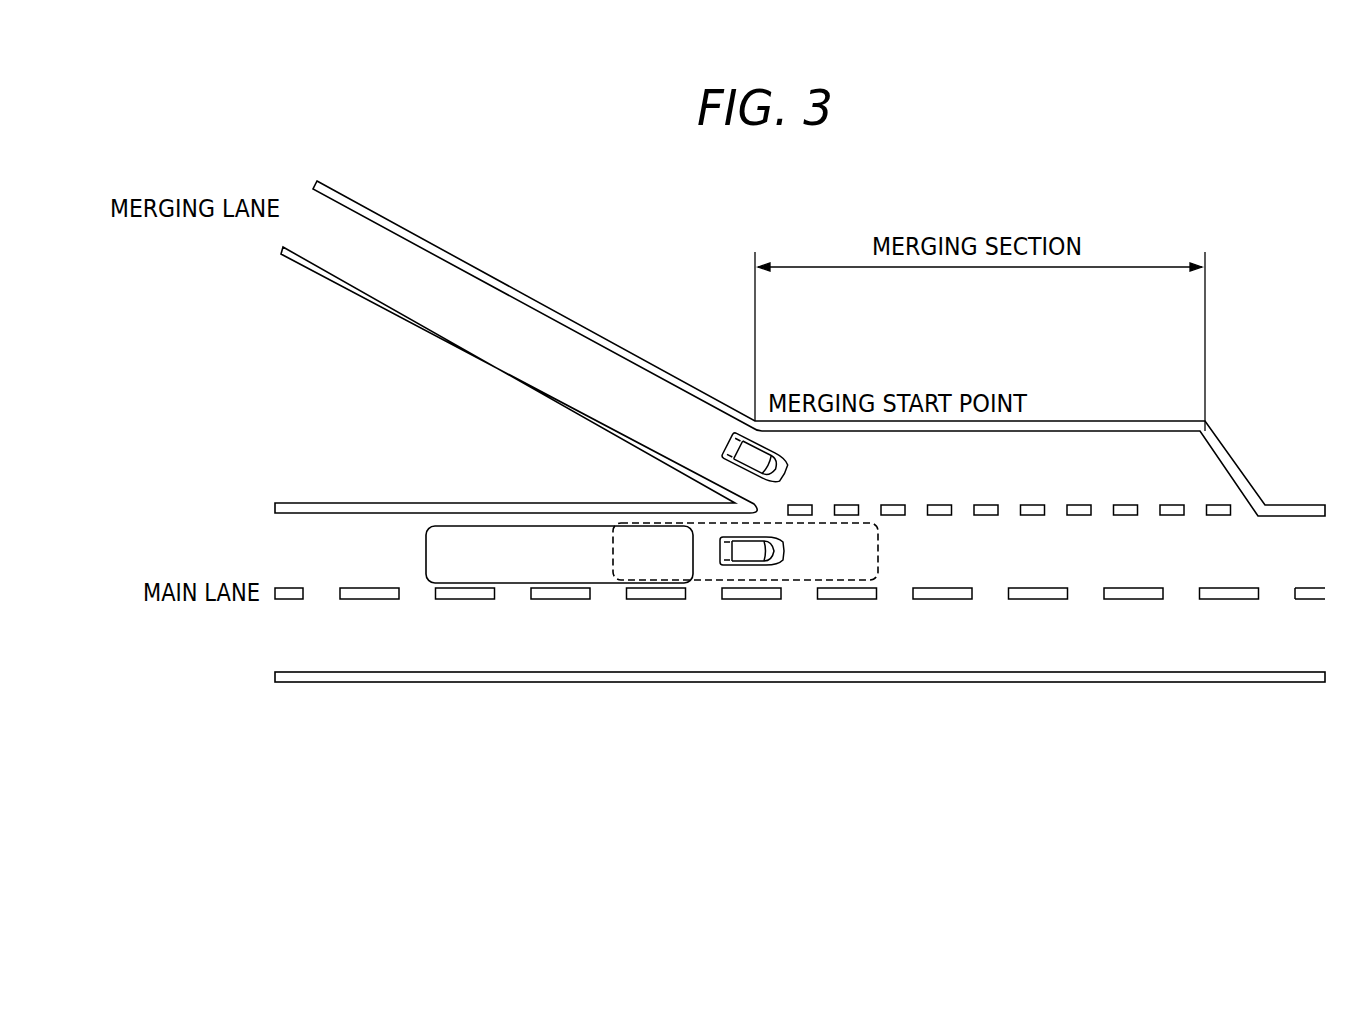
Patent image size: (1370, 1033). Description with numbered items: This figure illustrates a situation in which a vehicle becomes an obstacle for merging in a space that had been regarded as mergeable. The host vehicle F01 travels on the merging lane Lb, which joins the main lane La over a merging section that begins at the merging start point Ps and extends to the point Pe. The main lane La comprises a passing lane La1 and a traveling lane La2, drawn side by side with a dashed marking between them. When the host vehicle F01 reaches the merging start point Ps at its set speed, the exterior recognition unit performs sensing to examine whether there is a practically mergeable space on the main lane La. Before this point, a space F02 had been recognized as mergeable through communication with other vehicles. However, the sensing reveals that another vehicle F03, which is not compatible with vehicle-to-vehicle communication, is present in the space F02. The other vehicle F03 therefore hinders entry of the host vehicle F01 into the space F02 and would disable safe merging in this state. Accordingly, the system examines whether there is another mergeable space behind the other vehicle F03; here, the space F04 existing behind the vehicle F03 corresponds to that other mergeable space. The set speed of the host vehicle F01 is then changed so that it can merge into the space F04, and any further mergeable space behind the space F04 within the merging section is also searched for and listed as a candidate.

The merging lane Lb is at (583, 362).
The main lane La is at (1250, 745).
The passing lane La1 is at (1217, 548).
The traveling lane La2 is at (1140, 628).
The host vehicle F01 is at (726, 438).
The space F02 is at (830, 600).
The other vehicle F03 is at (747, 552).
The space F04 is at (512, 583).
The merging start point Ps is at (755, 319).
The merging end point Pe is at (1205, 324).